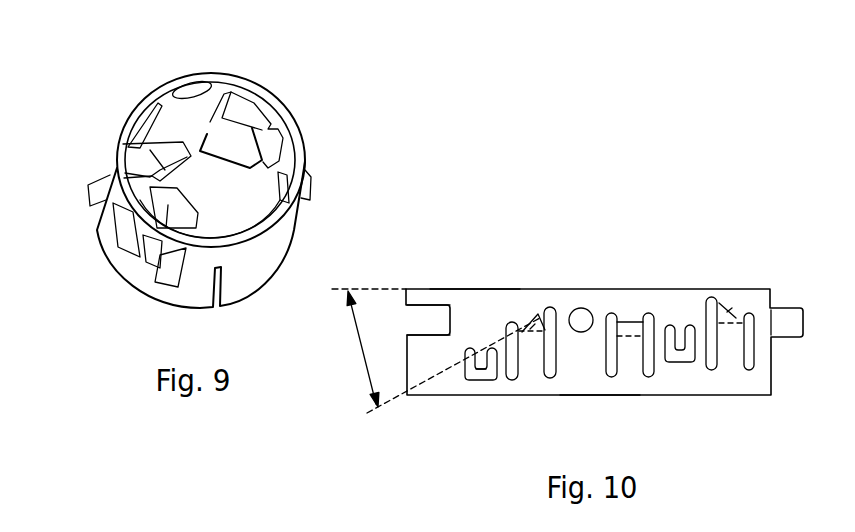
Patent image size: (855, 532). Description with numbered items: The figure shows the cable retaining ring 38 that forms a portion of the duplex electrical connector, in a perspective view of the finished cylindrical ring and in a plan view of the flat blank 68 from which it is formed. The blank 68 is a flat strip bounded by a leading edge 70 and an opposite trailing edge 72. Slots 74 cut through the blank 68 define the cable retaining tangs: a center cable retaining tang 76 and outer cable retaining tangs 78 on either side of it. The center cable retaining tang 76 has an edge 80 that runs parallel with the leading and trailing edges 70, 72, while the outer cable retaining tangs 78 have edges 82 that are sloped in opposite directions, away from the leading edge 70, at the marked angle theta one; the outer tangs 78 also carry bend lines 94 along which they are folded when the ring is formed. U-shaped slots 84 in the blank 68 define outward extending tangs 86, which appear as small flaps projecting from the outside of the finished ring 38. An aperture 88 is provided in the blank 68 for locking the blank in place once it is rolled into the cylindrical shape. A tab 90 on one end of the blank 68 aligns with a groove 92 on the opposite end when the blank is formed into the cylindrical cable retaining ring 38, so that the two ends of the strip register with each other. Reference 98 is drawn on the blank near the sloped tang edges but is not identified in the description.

In FIG. 9, the cable retaining ring 38 is at (203, 157).
In FIG. 10, the blank 68 is at (559, 359).
In FIG. 10, the leading edge 70 is at (473, 289).
In FIG. 10, the trailing edge 72 is at (593, 396).
In FIG. 10, the slots 74 is at (512, 380).
In FIG. 9, the center cable retaining tang 76 is at (167, 164).
In FIG. 10, the center cable retaining tang 76 is at (630, 347).
In FIG. 9, the outer cable retaining tangs 78 is at (230, 153).
In FIG. 10, the outer cable retaining tangs 78 is at (528, 348).
In FIG. 10, the edge 80 is at (632, 320).
In FIG. 10, the edges 82 is at (536, 317).
In FIG. 10, the U-shaped slots 84 is at (477, 381).
In FIG. 9, the outward extending tangs 86 is at (93, 197).
In FIG. 10, the outward extending tangs 86 is at (487, 381).
In FIG. 10, the aperture 88 is at (581, 332).
In FIG. 10, the tab 90 is at (790, 325).
In FIG. 10, the groove 92 is at (434, 321).
In FIG. 10, the bend lines 94 is at (533, 323).
In FIG. 10, the bend 98 is at (530, 329).